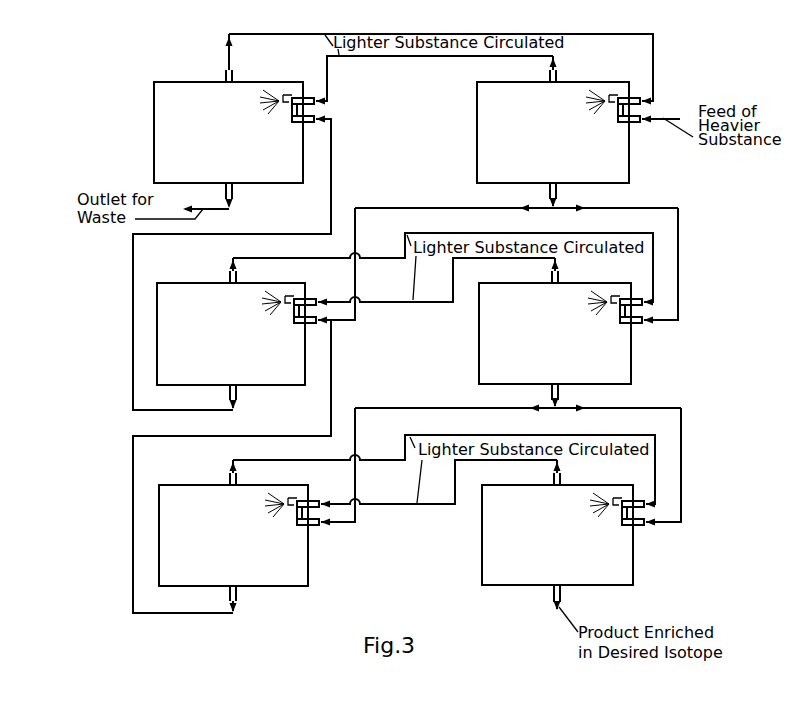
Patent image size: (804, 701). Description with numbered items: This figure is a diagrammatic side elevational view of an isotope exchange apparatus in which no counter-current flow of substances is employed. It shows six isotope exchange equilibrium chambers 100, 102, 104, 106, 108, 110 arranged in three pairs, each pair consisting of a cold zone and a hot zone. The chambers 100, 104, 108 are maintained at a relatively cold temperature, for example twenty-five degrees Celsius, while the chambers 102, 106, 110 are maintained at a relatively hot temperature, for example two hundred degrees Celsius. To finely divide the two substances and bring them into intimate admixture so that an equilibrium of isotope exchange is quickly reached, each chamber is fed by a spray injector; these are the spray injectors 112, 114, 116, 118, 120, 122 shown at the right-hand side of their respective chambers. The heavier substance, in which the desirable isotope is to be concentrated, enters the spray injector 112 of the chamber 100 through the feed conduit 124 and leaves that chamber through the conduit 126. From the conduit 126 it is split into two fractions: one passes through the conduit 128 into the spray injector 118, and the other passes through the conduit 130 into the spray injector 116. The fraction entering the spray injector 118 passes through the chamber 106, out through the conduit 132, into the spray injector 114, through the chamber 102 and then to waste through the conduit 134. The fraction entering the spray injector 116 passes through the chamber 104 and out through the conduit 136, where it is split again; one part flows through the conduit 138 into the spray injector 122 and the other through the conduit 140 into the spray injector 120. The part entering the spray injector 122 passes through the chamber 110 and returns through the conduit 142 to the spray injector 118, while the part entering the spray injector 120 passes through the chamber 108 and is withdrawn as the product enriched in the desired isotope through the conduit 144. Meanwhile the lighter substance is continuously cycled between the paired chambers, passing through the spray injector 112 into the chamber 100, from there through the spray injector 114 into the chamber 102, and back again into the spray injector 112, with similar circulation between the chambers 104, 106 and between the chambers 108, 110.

The isotope exchange equilibrium chamber 100 is at (620, 153).
The isotope exchange equilibrium chamber 102 is at (178, 156).
The isotope exchange equilibrium chamber 104 is at (620, 352).
The isotope exchange equilibrium chamber 106 is at (185, 354).
The isotope exchange equilibrium chamber 108 is at (630, 548).
The isotope exchange equilibrium chamber 110 is at (183, 551).
The spray injector 112 is at (610, 104).
The spray injector 114 is at (285, 108).
The spray injector 116 is at (610, 308).
The spray injector 118 is at (283, 317).
The spray injector 120 is at (612, 508).
The spray injector 122 is at (287, 515).
The conduit 124 is at (665, 115).
The conduit 126 is at (557, 202).
The conduit 128 is at (452, 200).
The conduit 130 is at (647, 202).
The conduit 132 is at (240, 405).
The conduit 134 is at (236, 206).
The conduit 136 is at (558, 404).
The conduit 138 is at (449, 407).
The conduit 140 is at (648, 405).
The conduit 142 is at (238, 608).
The conduit 144 is at (560, 607).